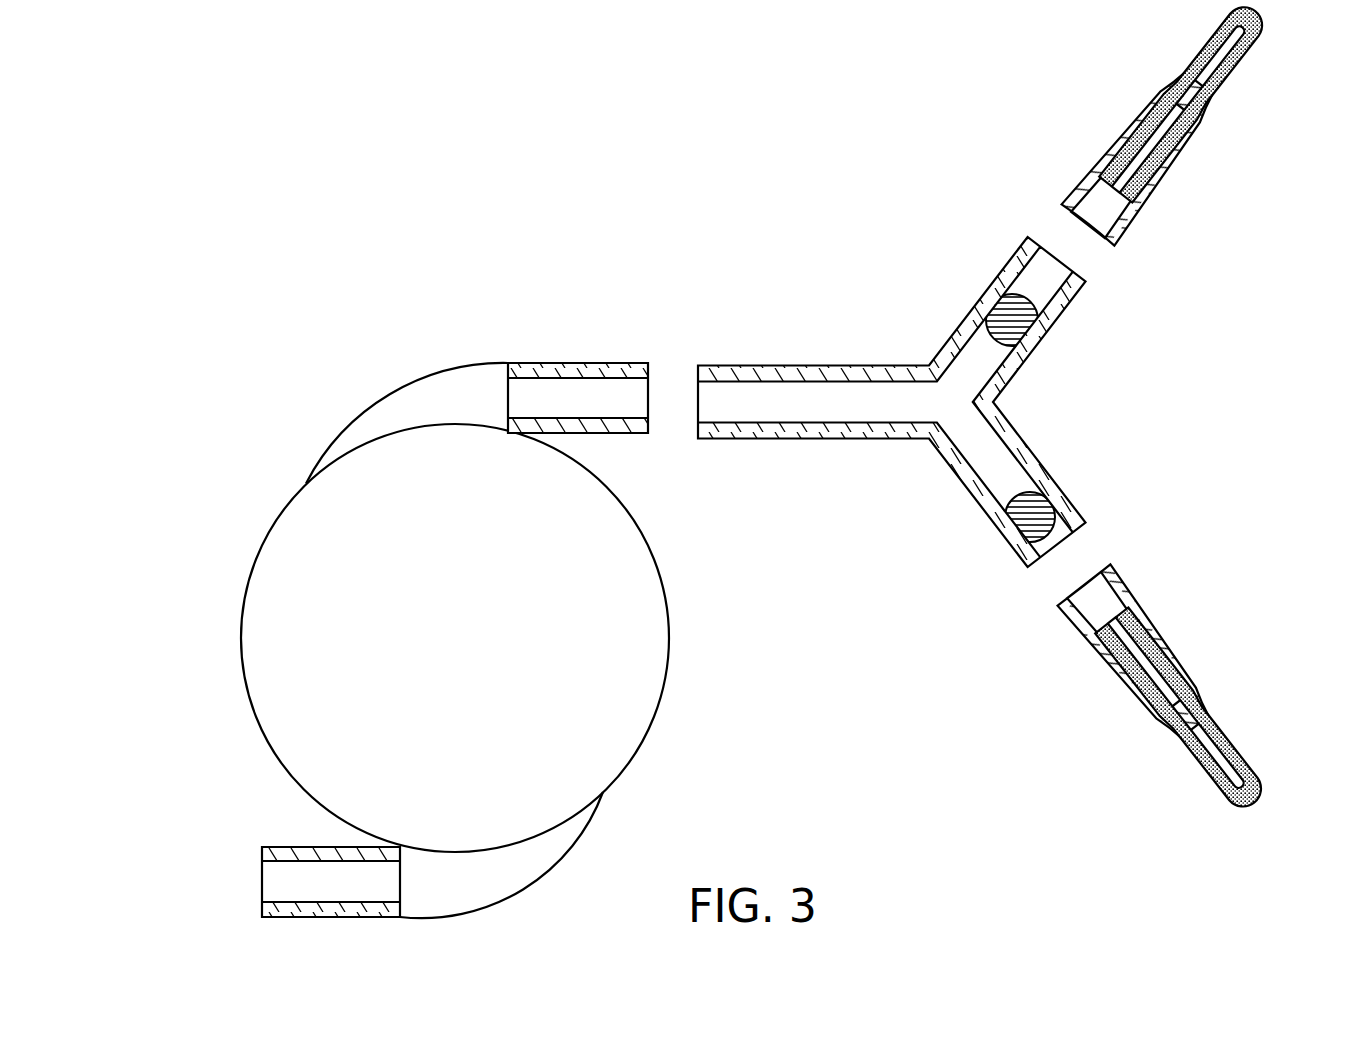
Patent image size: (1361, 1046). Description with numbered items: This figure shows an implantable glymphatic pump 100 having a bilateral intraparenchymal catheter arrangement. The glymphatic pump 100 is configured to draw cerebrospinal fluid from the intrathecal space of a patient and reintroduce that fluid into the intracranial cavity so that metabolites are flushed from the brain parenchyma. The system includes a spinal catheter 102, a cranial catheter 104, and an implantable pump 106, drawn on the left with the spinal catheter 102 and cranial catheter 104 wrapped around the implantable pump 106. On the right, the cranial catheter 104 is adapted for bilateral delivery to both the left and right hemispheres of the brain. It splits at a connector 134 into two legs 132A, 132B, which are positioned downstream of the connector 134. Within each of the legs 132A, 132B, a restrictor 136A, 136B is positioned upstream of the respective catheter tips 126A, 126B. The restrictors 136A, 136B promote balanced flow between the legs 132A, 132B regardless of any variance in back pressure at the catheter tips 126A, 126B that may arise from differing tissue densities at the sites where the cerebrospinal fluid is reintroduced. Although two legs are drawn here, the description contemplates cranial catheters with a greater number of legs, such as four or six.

The implantable glymphatic pump 100 is at (352, 197).
The spinal catheter 102 is at (278, 880).
The cranial catheter 104 is at (600, 385).
The implantable pump 106 is at (272, 644).
The connector 134 is at (922, 405).
The restrictor 136A is at (1002, 290).
The restrictor 136B is at (1010, 552).
The leg 132A is at (1088, 172).
The leg 132B is at (1075, 637).
The catheter tip 126A is at (1236, 70).
The catheter tip 126B is at (1203, 768).